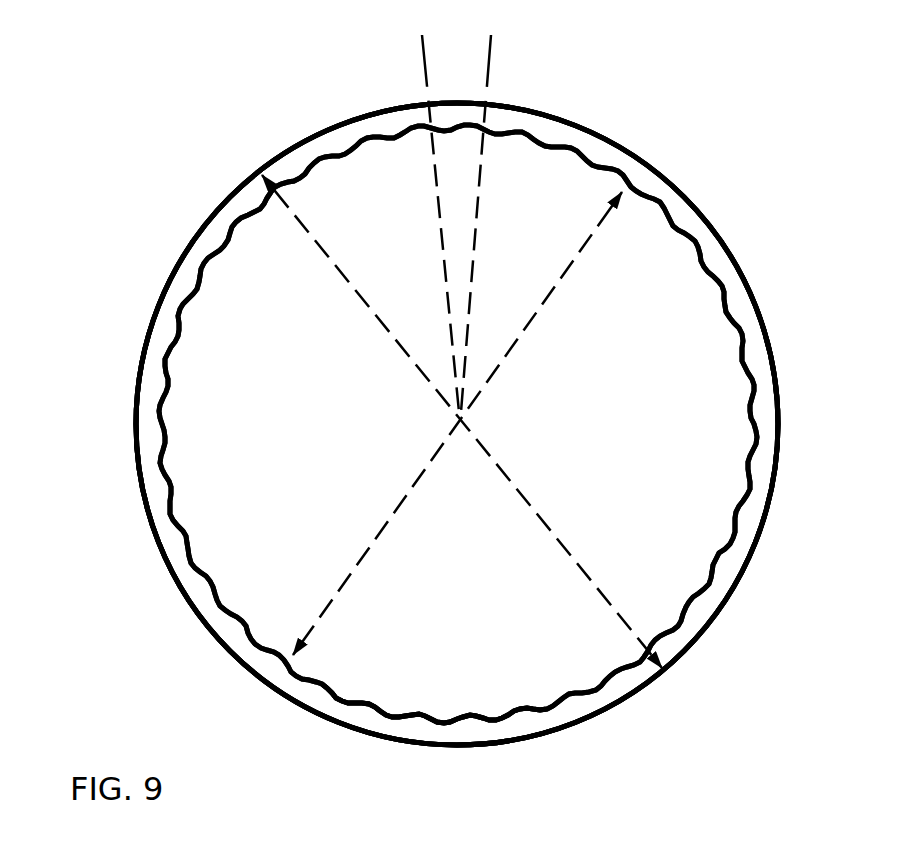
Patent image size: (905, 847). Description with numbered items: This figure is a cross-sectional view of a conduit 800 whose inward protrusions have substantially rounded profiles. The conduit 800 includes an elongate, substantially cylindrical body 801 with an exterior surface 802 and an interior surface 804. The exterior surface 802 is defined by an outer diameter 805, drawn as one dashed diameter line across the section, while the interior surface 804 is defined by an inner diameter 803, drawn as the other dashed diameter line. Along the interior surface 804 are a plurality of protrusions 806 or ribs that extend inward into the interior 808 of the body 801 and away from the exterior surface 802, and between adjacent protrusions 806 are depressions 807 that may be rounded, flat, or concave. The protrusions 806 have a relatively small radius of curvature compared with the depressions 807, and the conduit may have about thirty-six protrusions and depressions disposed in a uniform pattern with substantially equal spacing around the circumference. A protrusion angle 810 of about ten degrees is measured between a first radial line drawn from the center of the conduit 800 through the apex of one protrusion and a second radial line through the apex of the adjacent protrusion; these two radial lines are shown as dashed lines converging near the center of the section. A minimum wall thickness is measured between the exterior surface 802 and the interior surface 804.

The conduit 800 is at (160, 130).
The body 801 is at (760, 397).
The exterior surface 802 is at (590, 132).
The inner diameter 803 is at (528, 327).
The interior surface 804 is at (186, 523).
The outer diameter 805 is at (357, 292).
The protrusions 806 is at (433, 710).
The depressions 807 is at (400, 723).
The interior 808 is at (623, 303).
The protrusion angle 810 is at (487, 69).